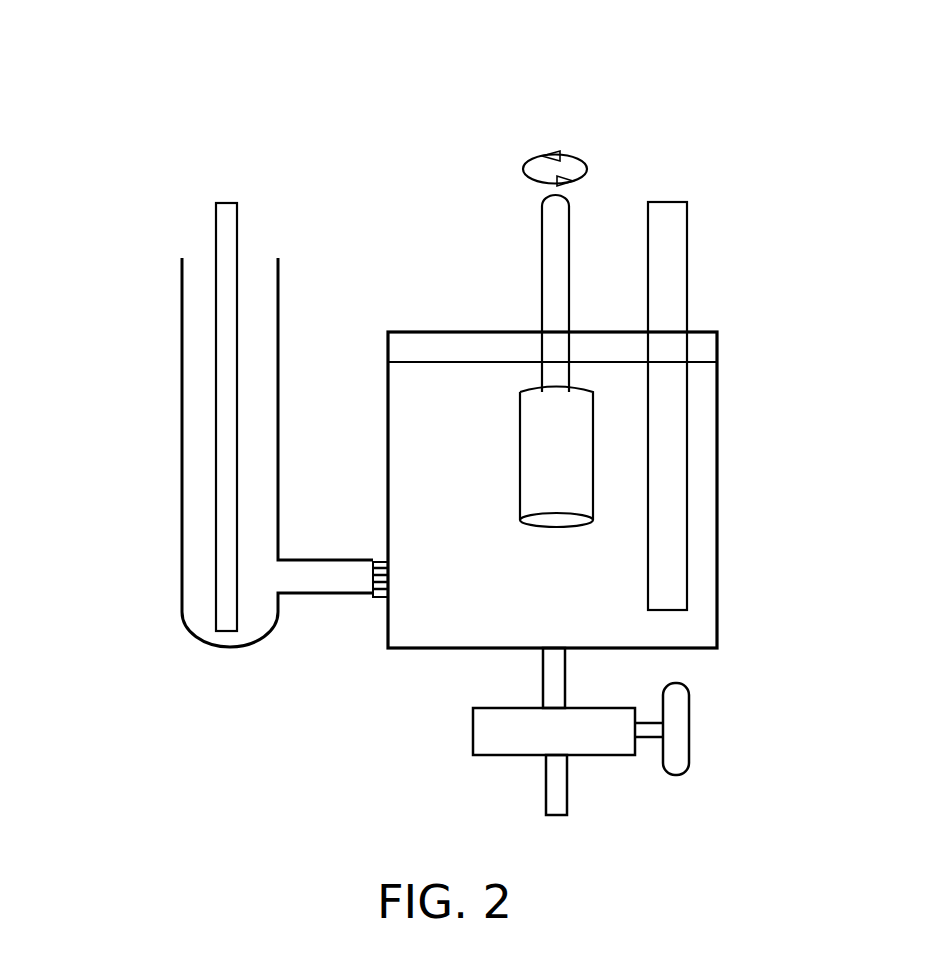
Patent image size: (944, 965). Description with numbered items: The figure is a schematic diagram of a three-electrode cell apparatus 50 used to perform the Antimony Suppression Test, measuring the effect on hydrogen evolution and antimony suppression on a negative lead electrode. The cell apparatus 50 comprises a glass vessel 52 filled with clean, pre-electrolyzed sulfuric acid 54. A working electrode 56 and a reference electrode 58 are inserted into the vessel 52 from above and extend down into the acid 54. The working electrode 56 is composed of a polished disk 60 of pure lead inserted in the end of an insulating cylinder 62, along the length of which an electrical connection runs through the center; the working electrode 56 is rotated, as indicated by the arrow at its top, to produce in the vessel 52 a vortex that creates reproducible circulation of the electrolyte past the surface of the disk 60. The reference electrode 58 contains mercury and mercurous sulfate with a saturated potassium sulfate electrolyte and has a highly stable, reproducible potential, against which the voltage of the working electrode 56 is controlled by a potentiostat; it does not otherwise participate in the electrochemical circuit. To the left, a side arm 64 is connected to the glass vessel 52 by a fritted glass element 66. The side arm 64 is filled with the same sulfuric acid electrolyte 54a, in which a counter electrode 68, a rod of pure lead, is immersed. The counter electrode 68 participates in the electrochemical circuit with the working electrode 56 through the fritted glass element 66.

The three-electrode cell apparatus 50 is at (686, 95).
The glass vessel 52 is at (717, 531).
The sulfuric acid 54 is at (484, 607).
The sulfuric acid electrolyte 54a is at (182, 532).
The working electrode 56 is at (562, 292).
The reference electrode 58 is at (687, 295).
The polished disk 60 is at (558, 523).
The insulating cylinder 62 is at (552, 460).
The side arm 64 is at (182, 441).
The fritted glass element 66 is at (383, 560).
The counter electrode 68 is at (223, 200).